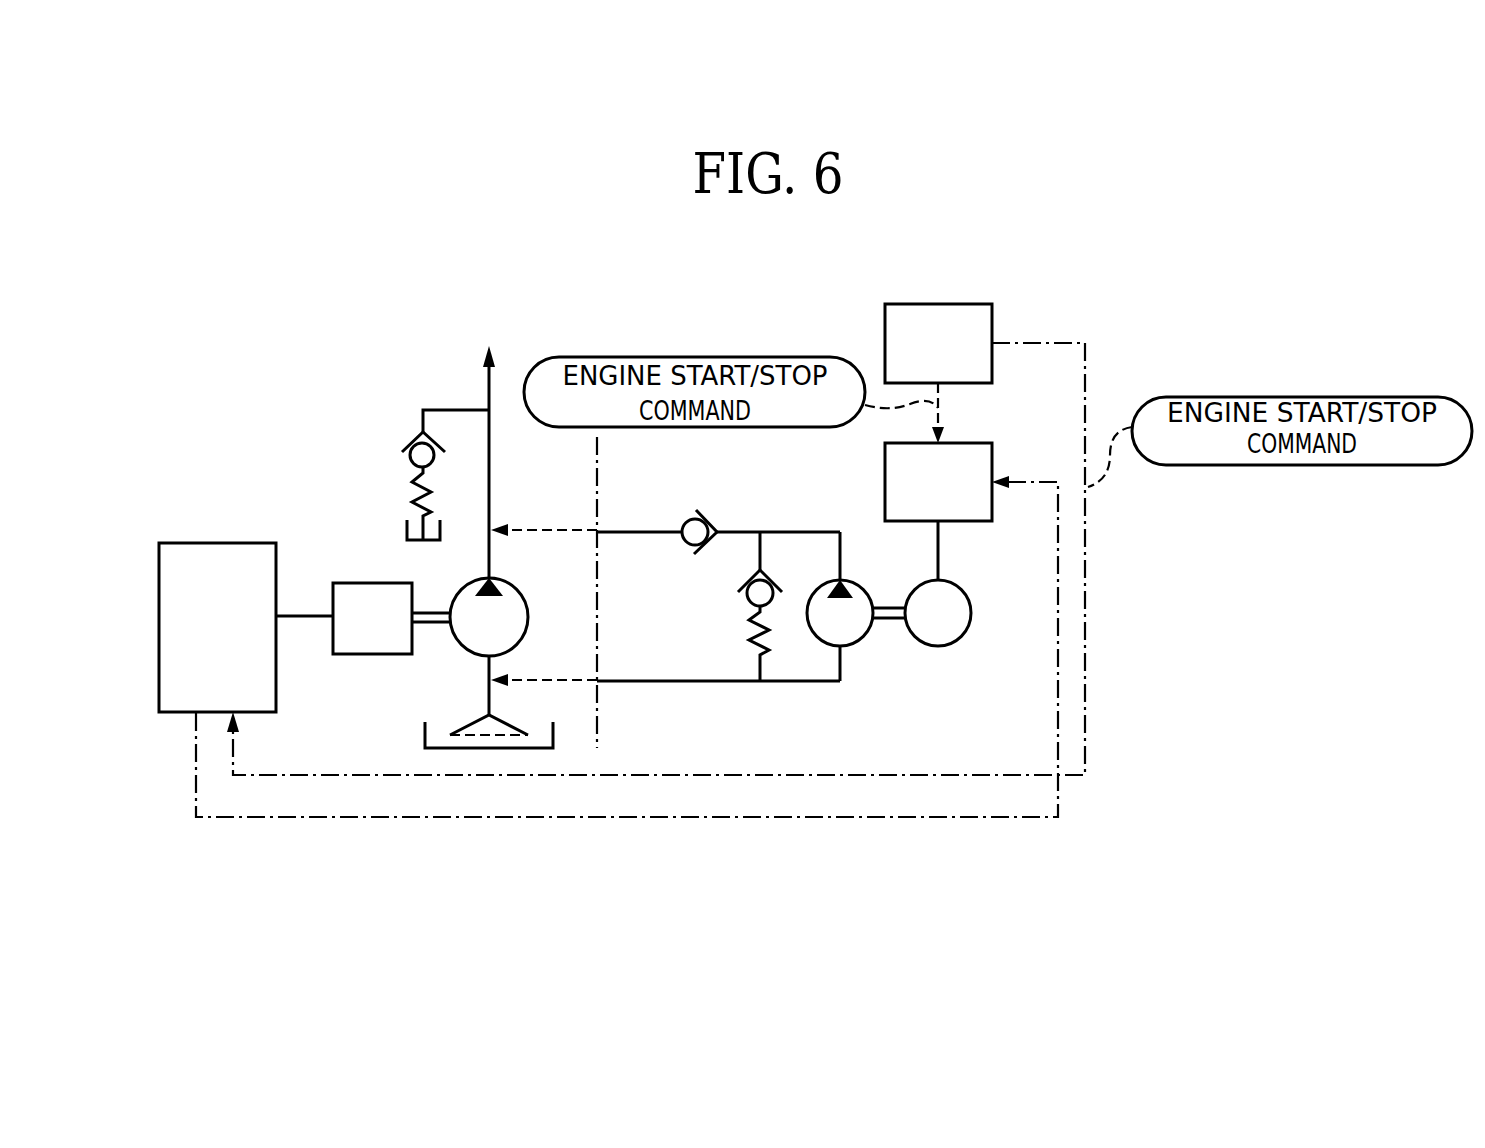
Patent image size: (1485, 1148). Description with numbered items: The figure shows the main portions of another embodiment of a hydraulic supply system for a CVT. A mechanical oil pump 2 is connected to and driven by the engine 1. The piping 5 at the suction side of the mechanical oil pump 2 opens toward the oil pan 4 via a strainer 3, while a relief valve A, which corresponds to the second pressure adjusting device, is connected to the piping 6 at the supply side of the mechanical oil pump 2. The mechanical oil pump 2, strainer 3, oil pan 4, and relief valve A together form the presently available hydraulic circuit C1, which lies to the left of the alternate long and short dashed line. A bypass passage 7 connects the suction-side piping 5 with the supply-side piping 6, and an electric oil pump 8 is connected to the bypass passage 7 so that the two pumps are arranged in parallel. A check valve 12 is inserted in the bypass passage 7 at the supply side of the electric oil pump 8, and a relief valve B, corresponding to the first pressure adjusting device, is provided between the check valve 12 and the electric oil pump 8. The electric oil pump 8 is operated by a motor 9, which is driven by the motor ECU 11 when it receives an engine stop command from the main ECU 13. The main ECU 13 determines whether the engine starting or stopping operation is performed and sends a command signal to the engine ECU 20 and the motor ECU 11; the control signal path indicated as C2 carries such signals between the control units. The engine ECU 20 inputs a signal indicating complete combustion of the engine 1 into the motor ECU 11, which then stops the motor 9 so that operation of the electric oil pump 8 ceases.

The engine 1 is at (351, 583).
The mechanical oil pump 2 is at (527, 600).
The strainer 3 is at (469, 727).
The oil pan 4 is at (425, 736).
The piping at the suction side 5 is at (493, 697).
The piping at the supply side 6 is at (491, 470).
The bypass passage 7 is at (672, 683).
The electric oil pump 8 is at (858, 643).
The motor 9 is at (972, 619).
The motor ECU 11 is at (994, 458).
The check valve 12 is at (701, 518).
The main ECU 13 is at (994, 316).
The engine ECU 20 is at (241, 543).
The relief valve A is at (404, 450).
The relief valve B is at (745, 590).
The hydraulic circuit C1 is at (458, 793).
The control signal line from engine ECU to motor ECU C2 is at (751, 768).